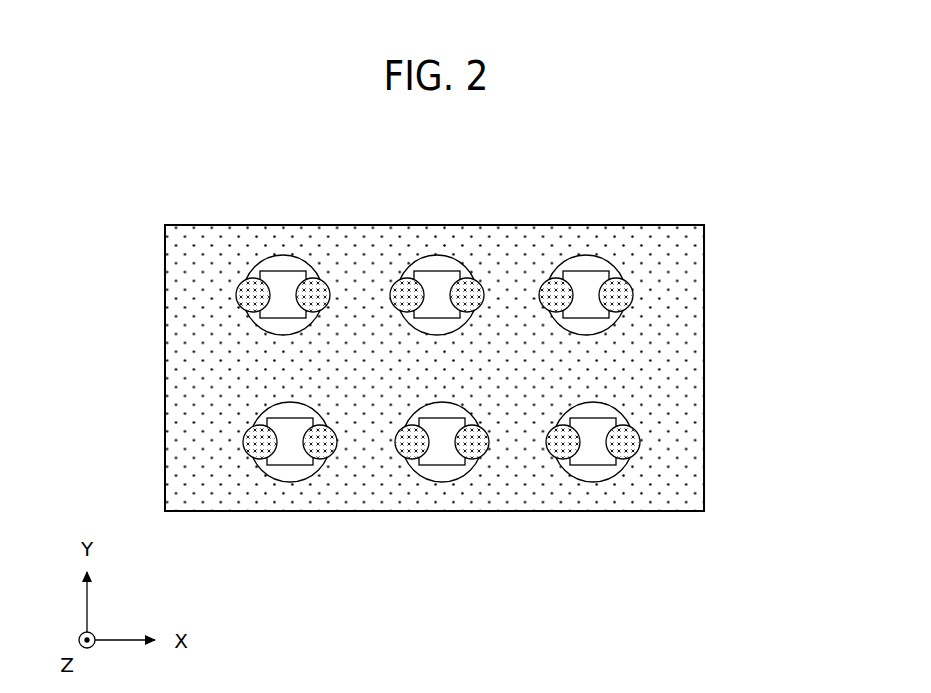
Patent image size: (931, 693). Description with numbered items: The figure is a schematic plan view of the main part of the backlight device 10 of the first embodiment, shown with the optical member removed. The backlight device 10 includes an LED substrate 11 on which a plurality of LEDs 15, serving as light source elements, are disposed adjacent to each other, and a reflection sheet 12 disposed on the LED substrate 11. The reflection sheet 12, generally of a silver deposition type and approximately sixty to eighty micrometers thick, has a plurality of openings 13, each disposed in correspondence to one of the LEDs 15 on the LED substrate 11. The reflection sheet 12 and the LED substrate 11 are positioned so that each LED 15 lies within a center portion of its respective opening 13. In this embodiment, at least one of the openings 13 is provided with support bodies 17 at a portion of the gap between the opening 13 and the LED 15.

The backlight device 10 is at (482, 317).
The LED substrate 11 is at (704, 380).
The reflection sheet 12 is at (238, 247).
The opening 13 is at (285, 256).
The LED 15 is at (436, 272).
The support body 17 is at (470, 288).